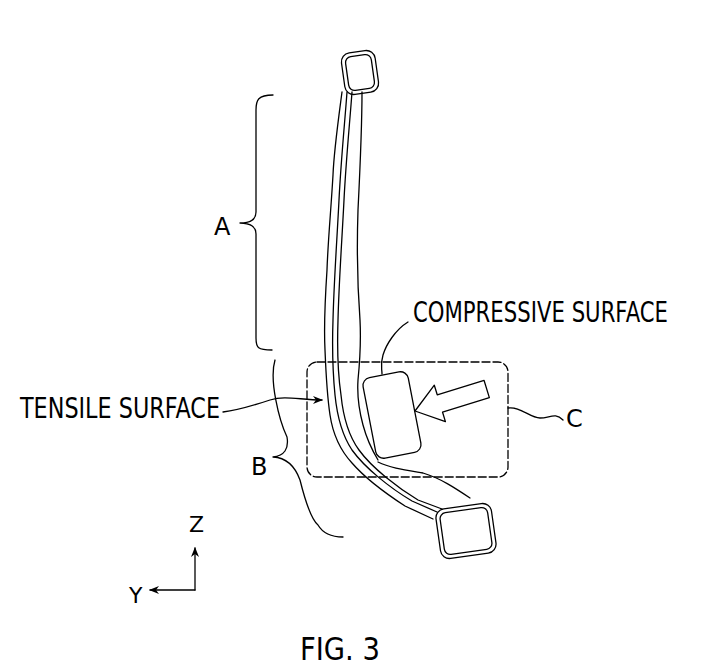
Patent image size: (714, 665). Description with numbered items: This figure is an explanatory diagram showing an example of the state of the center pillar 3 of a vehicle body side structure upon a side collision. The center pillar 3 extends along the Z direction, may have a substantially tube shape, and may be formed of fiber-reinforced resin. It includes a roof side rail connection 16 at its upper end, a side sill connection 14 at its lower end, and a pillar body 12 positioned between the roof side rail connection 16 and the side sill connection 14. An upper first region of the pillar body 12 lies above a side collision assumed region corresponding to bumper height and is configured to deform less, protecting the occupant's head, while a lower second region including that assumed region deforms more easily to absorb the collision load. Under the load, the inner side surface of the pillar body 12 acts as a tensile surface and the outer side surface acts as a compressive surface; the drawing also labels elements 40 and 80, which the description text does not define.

The center pillar 3 is at (444, 291).
The pillar body 12 is at (397, 305).
The side sill connection 14 is at (498, 525).
The roof side rail connection 16 is at (371, 59).
The reinforcing layer 40 is at (357, 267).
The protective member 80 is at (372, 402).